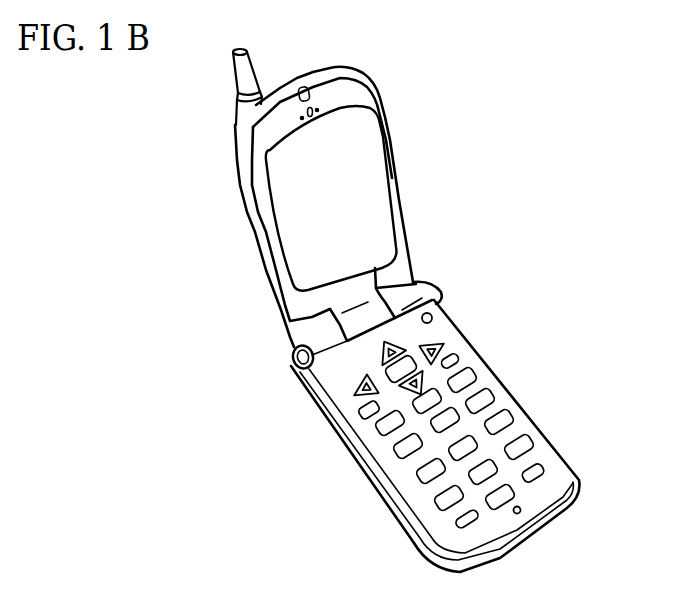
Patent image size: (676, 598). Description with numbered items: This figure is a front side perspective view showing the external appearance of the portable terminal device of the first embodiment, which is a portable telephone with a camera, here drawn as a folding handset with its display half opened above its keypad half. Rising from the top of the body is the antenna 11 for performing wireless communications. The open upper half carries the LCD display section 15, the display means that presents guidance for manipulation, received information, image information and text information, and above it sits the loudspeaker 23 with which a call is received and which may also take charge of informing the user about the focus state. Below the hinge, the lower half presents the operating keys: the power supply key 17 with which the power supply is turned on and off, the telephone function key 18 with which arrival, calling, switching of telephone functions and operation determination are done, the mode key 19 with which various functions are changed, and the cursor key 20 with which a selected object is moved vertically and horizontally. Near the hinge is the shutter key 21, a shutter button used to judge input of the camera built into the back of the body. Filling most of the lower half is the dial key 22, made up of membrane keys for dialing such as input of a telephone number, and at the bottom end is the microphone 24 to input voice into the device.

The antenna 11 is at (236, 78).
The LCD display section 15 is at (363, 183).
The power supply key 17 is at (462, 362).
The telephone function key 18 is at (357, 410).
The mode key 19 is at (446, 347).
The cursor key 20 is at (360, 395).
The shutter key 21 is at (431, 315).
The dial key 22 is at (530, 425).
The loudspeaker 23 is at (319, 111).
The microphone 24 is at (521, 512).